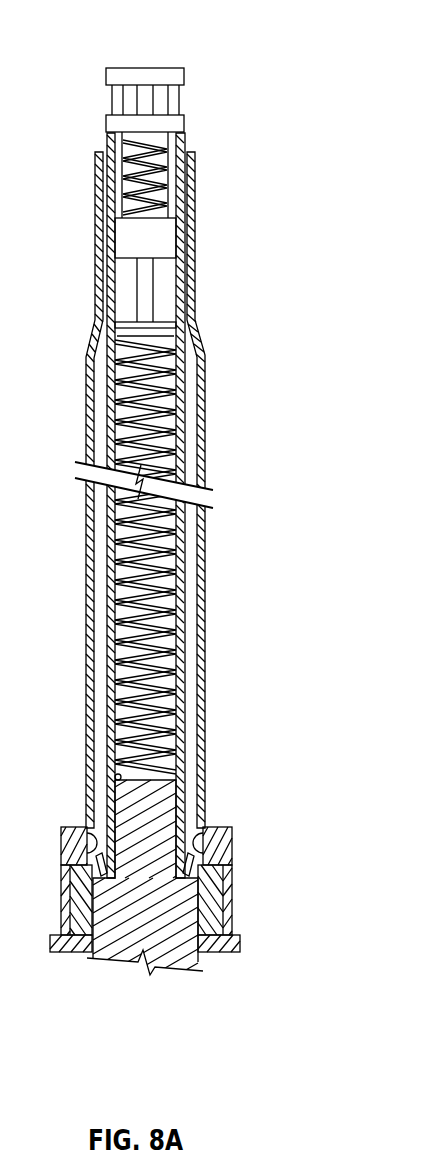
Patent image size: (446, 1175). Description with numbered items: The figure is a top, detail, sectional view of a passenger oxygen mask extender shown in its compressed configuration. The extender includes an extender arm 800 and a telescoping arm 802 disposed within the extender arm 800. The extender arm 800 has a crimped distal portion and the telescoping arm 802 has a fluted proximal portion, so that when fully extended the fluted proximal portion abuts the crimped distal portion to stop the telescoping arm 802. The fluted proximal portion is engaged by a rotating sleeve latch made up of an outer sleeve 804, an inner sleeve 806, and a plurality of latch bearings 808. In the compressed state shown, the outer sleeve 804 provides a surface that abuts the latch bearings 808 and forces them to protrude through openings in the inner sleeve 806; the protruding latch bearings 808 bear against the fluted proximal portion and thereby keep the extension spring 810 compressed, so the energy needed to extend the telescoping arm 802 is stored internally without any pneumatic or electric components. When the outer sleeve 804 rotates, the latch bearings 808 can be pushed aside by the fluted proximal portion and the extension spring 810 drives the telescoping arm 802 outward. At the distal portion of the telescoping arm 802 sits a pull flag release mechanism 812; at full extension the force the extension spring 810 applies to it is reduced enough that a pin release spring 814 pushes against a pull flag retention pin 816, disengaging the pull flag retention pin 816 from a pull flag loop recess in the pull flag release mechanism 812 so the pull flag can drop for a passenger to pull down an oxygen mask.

The extender arm 800 is at (87, 617).
The telescoping arm 802 is at (178, 603).
The outer sleeve 804 is at (70, 847).
The inner sleeve 806 is at (67, 943).
The latch bearings 808 is at (200, 846).
The extension spring 810 is at (123, 355).
The pull flag release mechanism 812 is at (125, 80).
The pin release spring 814 is at (158, 211).
The pull flag retention pin 816 is at (145, 107).